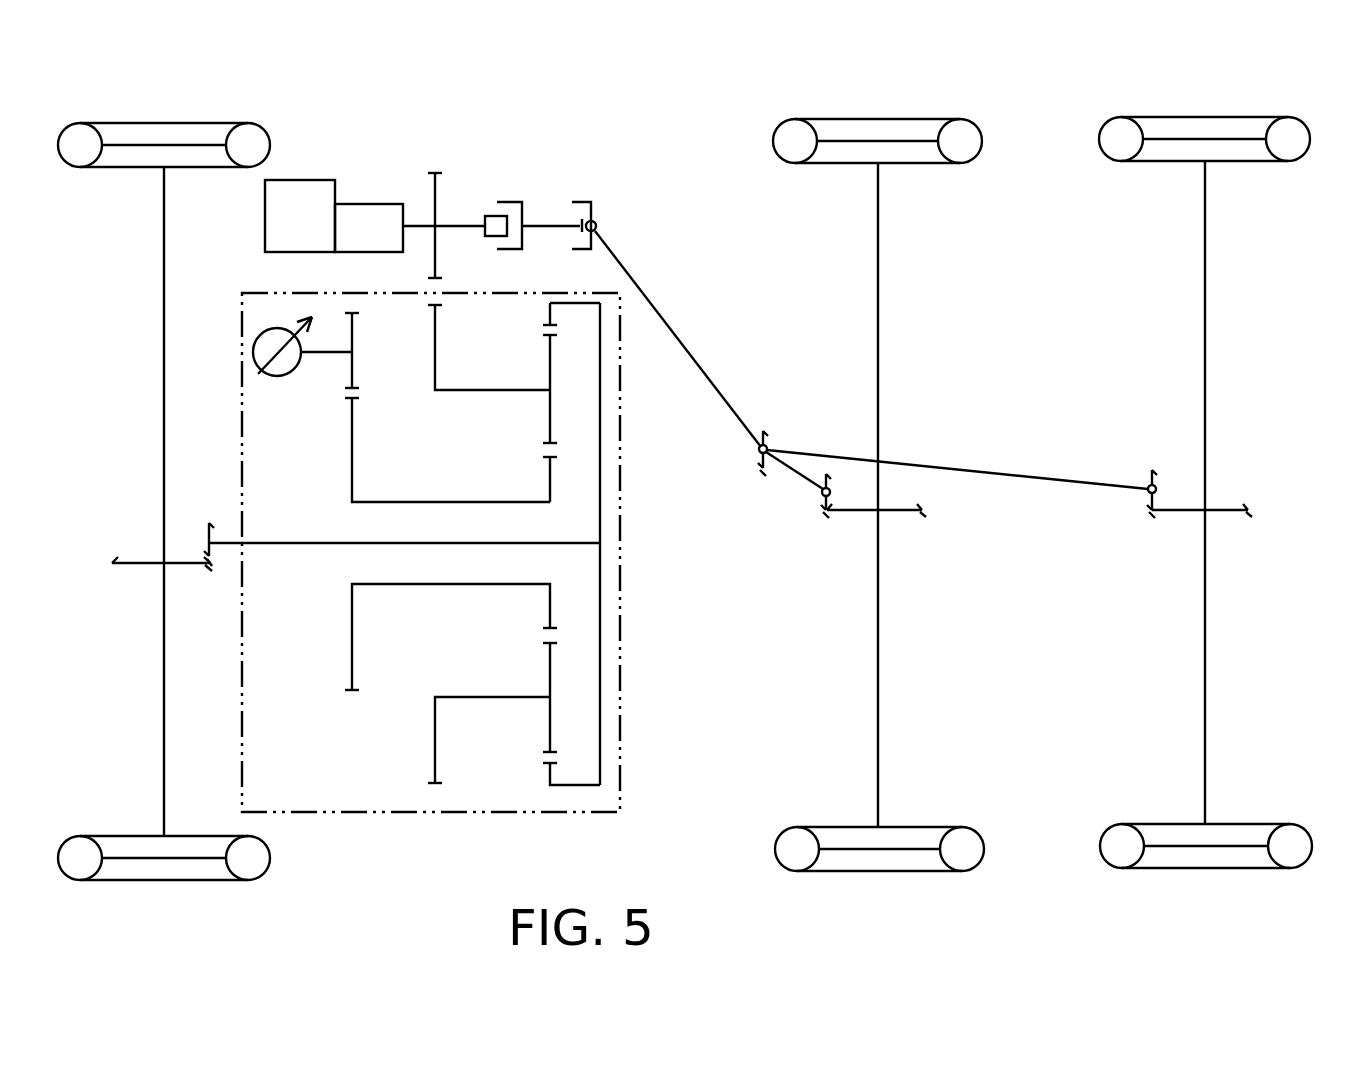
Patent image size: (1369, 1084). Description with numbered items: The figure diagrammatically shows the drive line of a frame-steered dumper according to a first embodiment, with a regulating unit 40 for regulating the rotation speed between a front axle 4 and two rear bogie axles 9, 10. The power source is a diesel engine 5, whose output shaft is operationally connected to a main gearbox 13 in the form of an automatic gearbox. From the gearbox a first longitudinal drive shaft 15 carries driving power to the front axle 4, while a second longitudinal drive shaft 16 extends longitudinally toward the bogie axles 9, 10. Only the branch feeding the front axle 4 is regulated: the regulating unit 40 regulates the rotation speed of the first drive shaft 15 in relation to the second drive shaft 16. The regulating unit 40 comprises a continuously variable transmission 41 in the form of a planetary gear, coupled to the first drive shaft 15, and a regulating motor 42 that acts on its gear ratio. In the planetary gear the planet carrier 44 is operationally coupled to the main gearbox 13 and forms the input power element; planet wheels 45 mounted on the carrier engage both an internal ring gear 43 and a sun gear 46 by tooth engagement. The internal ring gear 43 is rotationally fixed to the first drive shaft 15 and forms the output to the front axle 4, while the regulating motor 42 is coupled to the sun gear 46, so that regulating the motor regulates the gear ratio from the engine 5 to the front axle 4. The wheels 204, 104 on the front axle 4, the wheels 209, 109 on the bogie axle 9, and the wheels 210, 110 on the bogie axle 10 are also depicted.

The front axle 4 is at (183, 897).
The diesel engine 5 is at (318, 162).
The bogie axle 9 is at (908, 889).
The bogie axle 10 is at (1189, 890).
The main gearbox 13 is at (363, 184).
The first longitudinal drive shaft 15 is at (285, 543).
The second longitudinal drive shaft 16 is at (682, 337).
The regulating unit 40 is at (530, 813).
The continuously variable transmission 41 is at (467, 797).
The regulating motor 42 is at (253, 343).
The internal ring gear 43 is at (550, 477).
The planet carrier 44 is at (435, 350).
The planet wheel 45 is at (550, 360).
The sun gear 46 is at (603, 480).
The rear wheel of left track 104 is at (270, 859).
The rear wheel of middle track 109 is at (775, 847).
The rear wheel of right track 110 is at (1305, 860).
The front wheel of left track 204 is at (260, 123).
The front wheel of middle track 209 is at (982, 138).
The front wheel of right track 210 is at (1305, 120).